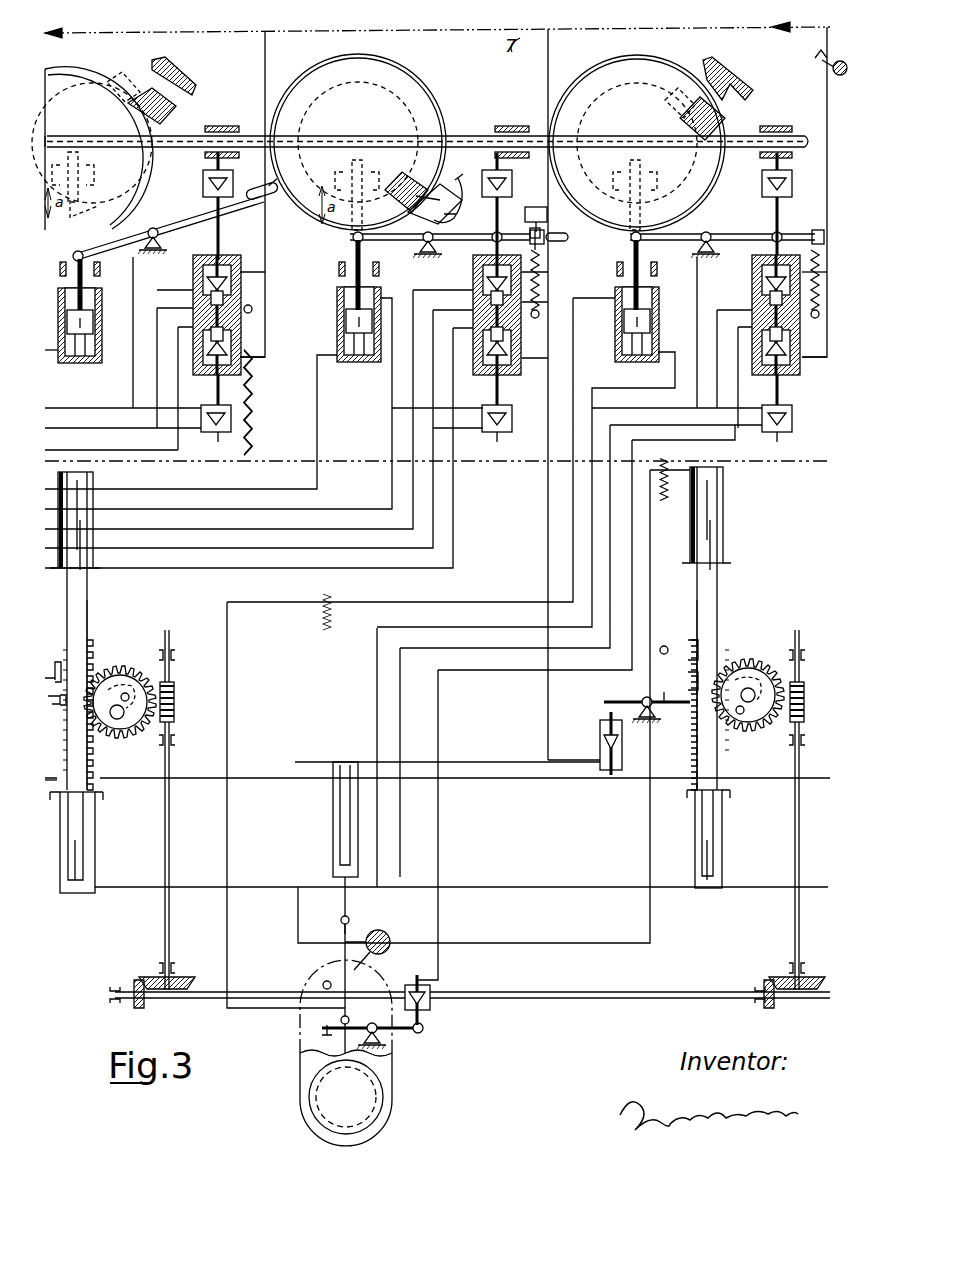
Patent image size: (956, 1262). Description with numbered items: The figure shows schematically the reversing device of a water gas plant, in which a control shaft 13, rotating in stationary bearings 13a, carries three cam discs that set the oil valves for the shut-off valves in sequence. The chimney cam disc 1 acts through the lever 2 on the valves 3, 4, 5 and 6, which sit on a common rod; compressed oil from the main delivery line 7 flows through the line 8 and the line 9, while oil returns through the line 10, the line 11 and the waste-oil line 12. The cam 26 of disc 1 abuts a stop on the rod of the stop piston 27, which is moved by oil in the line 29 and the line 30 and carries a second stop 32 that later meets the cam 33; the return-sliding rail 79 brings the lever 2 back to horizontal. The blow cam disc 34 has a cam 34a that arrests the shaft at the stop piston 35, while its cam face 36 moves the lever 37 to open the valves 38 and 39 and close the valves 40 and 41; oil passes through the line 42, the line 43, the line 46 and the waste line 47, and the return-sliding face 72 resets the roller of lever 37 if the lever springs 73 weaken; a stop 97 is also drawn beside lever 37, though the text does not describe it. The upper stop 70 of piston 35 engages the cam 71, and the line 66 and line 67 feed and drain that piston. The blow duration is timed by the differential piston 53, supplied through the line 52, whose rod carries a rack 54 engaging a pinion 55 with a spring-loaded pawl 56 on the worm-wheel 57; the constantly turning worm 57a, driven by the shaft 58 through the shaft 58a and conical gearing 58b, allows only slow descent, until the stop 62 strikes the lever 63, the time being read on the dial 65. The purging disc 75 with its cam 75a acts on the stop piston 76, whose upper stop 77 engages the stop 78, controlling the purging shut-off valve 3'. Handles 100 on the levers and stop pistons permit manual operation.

The cam disc 1 is at (112, 176).
The lever 2 is at (112, 262).
The valve 3 is at (171, 300).
The shut-off valve for purging with steam 3' is at (416, 870).
The valve 4 is at (235, 169).
The valve 5 is at (237, 332).
The valve 6 is at (232, 412).
The main compressed-oil delivery line 7 is at (826, 356).
The line 8 is at (265, 66).
The line 9 is at (144, 322).
The line 10 is at (136, 452).
The line 11 is at (102, 404).
The waste-oil line 12 is at (491, 772).
The control shaft 13 is at (466, 135).
The stationary bearings 13a is at (248, 105).
The cam 26 is at (90, 198).
The stop piston 27 is at (88, 312).
The line 29 is at (50, 290).
The line 30 is at (58, 364).
The stop 32 is at (68, 176).
The cam 33 is at (118, 82).
The blow cam disc 34 is at (425, 88).
The cam 34a is at (430, 182).
The stop piston 35 is at (326, 322).
The cam face 36 is at (410, 204).
The lever 37 is at (392, 242).
The valve 38 is at (473, 302).
The valve 39 is at (513, 174).
The valve 40 is at (505, 372).
The valve 41 is at (502, 434).
The line 42 is at (548, 296).
The line 43 is at (473, 326).
The line 46 is at (453, 382).
The waste-oil line 47 is at (414, 294).
The line 52 is at (45, 462).
The differential piston 53 is at (86, 604).
The rack 54 is at (90, 760).
The toothed pinion 55 is at (120, 658).
The pawl 56 is at (124, 742).
The worm-wheel 57 is at (168, 668).
The worm 57a is at (174, 694).
The shaft 58 is at (562, 992).
The shaft 58a is at (168, 816).
The conical wheel gearing 58b is at (148, 978).
The stop 62 is at (60, 700).
The spring controlled lever 63 is at (48, 680).
The dial 65 is at (50, 764).
The line 66 is at (375, 408).
The line 67 is at (316, 418).
The stop 70 is at (342, 180).
The cam 71 is at (360, 142).
The return-sliding face 72 is at (470, 198).
The lever springs 73 is at (542, 260).
The purging cam disc 75 is at (690, 54).
The cam 75a is at (708, 60).
The stop piston 76 is at (652, 306).
The upper stop 77 is at (643, 166).
The stop 78 is at (668, 74).
The return-sliding rail 79 is at (188, 76).
The stop 97 is at (547, 214).
The handles 100 is at (270, 210).